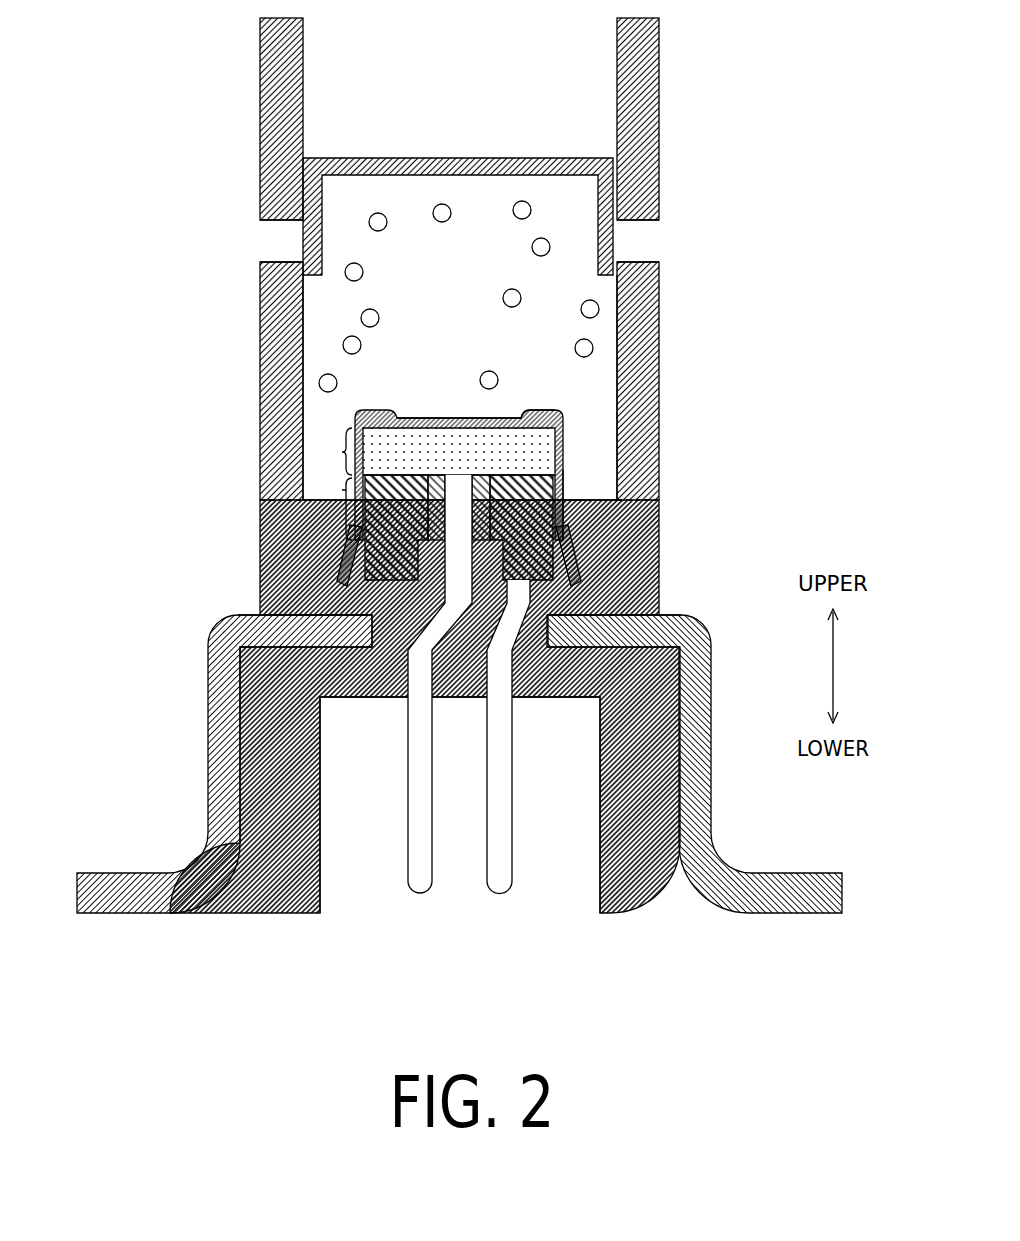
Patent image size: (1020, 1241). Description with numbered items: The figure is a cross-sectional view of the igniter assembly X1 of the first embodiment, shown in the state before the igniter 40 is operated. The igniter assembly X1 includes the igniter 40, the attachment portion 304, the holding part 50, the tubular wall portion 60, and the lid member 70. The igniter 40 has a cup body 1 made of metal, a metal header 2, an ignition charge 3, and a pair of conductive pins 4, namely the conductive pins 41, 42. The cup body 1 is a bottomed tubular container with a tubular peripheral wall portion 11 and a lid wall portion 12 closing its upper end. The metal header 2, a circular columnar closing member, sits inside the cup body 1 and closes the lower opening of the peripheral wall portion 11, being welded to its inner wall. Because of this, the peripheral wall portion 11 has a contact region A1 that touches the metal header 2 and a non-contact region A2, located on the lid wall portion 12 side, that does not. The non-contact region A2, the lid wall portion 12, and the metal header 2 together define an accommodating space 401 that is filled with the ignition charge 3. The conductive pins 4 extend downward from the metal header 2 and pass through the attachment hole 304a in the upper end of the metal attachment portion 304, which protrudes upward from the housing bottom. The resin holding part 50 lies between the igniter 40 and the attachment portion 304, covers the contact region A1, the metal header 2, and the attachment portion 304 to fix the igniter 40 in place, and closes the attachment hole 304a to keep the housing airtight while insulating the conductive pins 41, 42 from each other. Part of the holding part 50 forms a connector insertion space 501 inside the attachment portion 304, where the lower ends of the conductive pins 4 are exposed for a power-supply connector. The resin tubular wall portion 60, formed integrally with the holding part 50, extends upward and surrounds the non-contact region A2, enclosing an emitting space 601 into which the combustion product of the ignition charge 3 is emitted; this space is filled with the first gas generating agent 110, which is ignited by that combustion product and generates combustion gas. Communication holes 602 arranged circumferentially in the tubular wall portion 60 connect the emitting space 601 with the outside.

The igniter assembly X1 is at (439, 259).
The tubular wall portion 60 is at (664, 167).
The communication holes 602 is at (268, 240).
The lid member 70 is at (353, 155).
The emitting space 601 is at (437, 338).
The first gas generating agent 110 is at (521, 298).
The holding part 50 is at (664, 545).
The connector insertion space 501 is at (344, 821).
The attachment portion 304 is at (208, 740).
The attachment hole 304a is at (393, 618).
The metal header 2 is at (541, 470).
The lid wall portion 12 is at (531, 416).
The peripheral wall portion 11 is at (566, 491).
The accommodating space 401 is at (437, 468).
The ignition charge 3 is at (419, 438).
The cup body 1 is at (465, 403).
The non-contact region A2 is at (329, 451).
The contact region A1 is at (329, 505).
The igniter 40 is at (579, 452).
The pair of conductive pins 4 is at (432, 738).
The conductive pin 41 is at (418, 872).
The conductive pin 42 is at (476, 762).